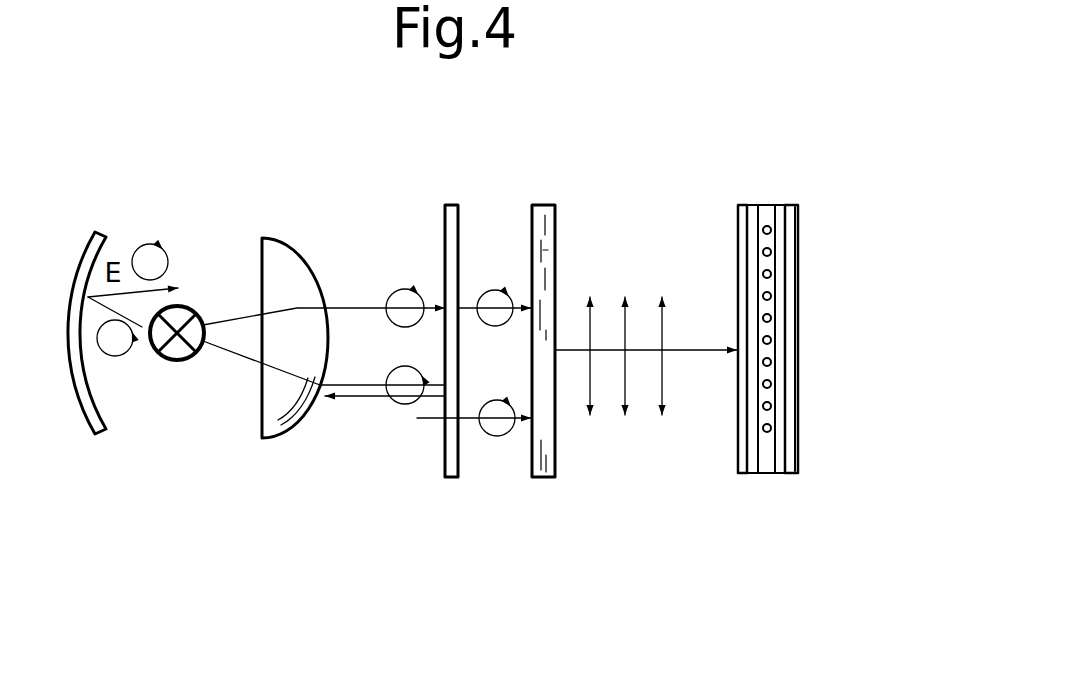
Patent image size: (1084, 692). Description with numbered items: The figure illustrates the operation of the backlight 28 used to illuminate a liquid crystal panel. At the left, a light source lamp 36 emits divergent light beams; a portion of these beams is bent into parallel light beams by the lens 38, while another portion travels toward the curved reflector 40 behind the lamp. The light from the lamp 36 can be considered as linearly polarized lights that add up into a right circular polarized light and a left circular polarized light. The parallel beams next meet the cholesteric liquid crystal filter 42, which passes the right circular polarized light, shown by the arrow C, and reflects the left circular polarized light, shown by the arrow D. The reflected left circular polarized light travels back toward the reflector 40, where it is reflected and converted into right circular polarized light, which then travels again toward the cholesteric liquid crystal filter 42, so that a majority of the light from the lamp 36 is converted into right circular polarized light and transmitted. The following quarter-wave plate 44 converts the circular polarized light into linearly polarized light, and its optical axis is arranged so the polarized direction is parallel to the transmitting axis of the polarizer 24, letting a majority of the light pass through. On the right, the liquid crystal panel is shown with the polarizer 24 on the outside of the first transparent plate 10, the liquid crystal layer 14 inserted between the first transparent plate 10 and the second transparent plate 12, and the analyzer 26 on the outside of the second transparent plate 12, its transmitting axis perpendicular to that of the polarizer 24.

The first transparent plate 10 is at (753, 480).
The second transparent plate 12 is at (778, 480).
The liquid crystal layer 14 is at (768, 211).
The polarizer 24 is at (742, 480).
The analyzer 26 is at (792, 480).
The backlight 28 is at (329, 214).
The light source lamp 36 is at (178, 360).
The lens 38 is at (290, 422).
The reflector 40 is at (103, 433).
The cholesteric liquid crystal filter 42 is at (450, 479).
The ¼ λ plate 44 is at (545, 479).